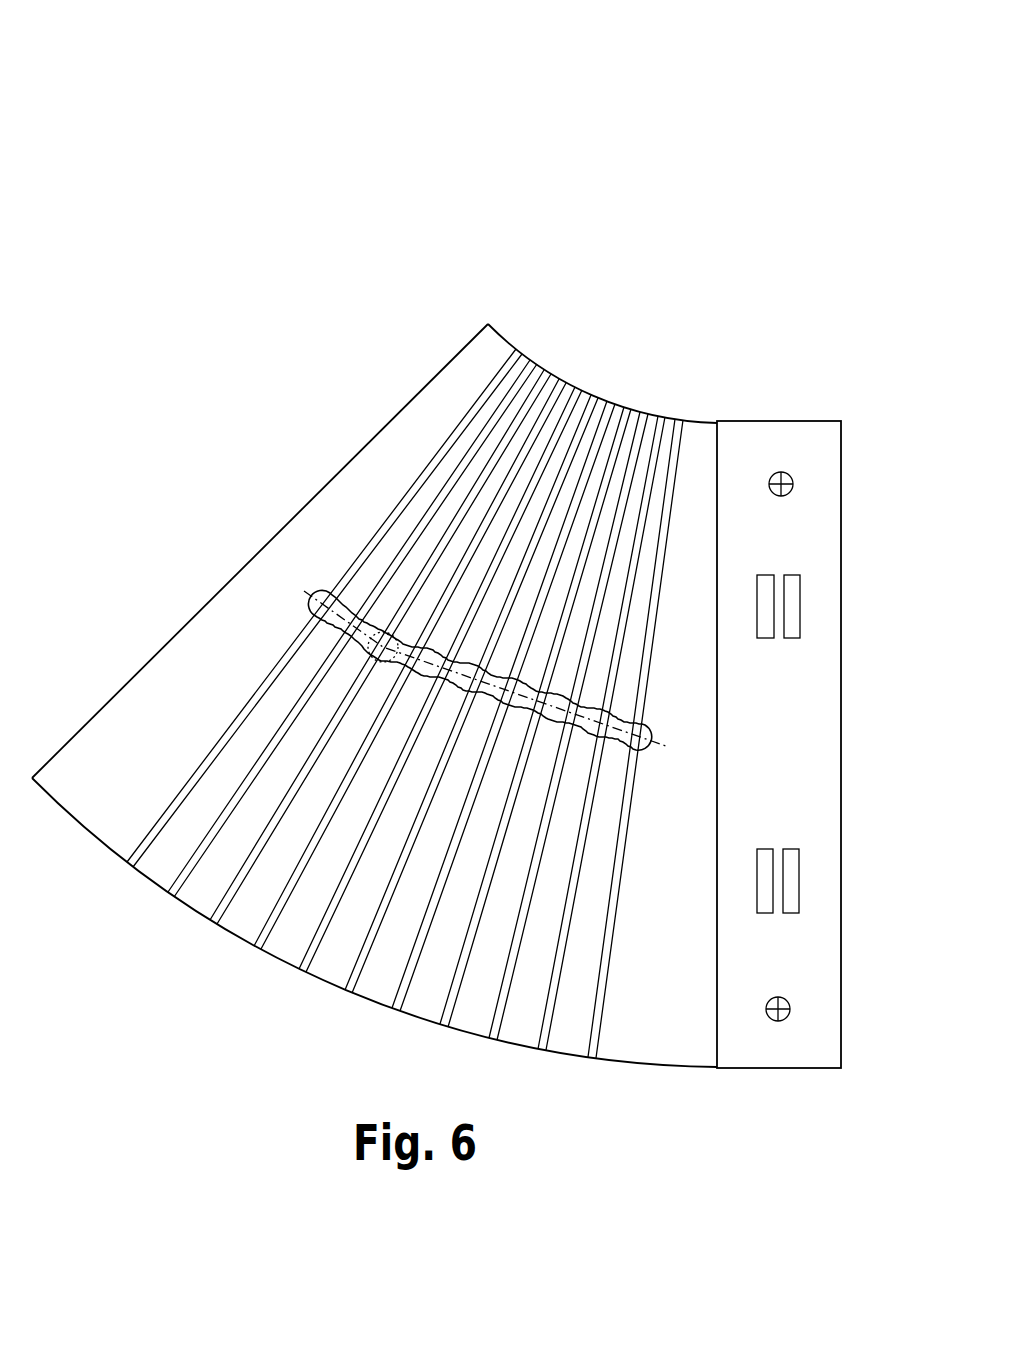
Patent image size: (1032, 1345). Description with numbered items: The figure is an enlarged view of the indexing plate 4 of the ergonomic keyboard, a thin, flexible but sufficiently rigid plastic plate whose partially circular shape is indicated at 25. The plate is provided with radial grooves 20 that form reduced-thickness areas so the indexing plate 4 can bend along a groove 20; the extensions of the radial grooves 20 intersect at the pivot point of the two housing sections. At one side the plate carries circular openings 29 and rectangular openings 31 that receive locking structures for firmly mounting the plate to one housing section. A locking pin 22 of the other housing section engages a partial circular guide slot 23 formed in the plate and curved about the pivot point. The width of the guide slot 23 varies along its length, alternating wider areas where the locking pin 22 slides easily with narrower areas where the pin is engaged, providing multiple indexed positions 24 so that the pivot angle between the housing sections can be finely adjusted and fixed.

The indexing plate 4 is at (658, 155).
The radial grooves 20 is at (577, 397).
The locking pin 22 is at (308, 604).
The guide slot 23 is at (322, 591).
The indexed positions 24 is at (333, 640).
The partially circular shape 25 is at (638, 1068).
The circular openings 29 is at (787, 472).
The rectangular openings 31 is at (792, 583).